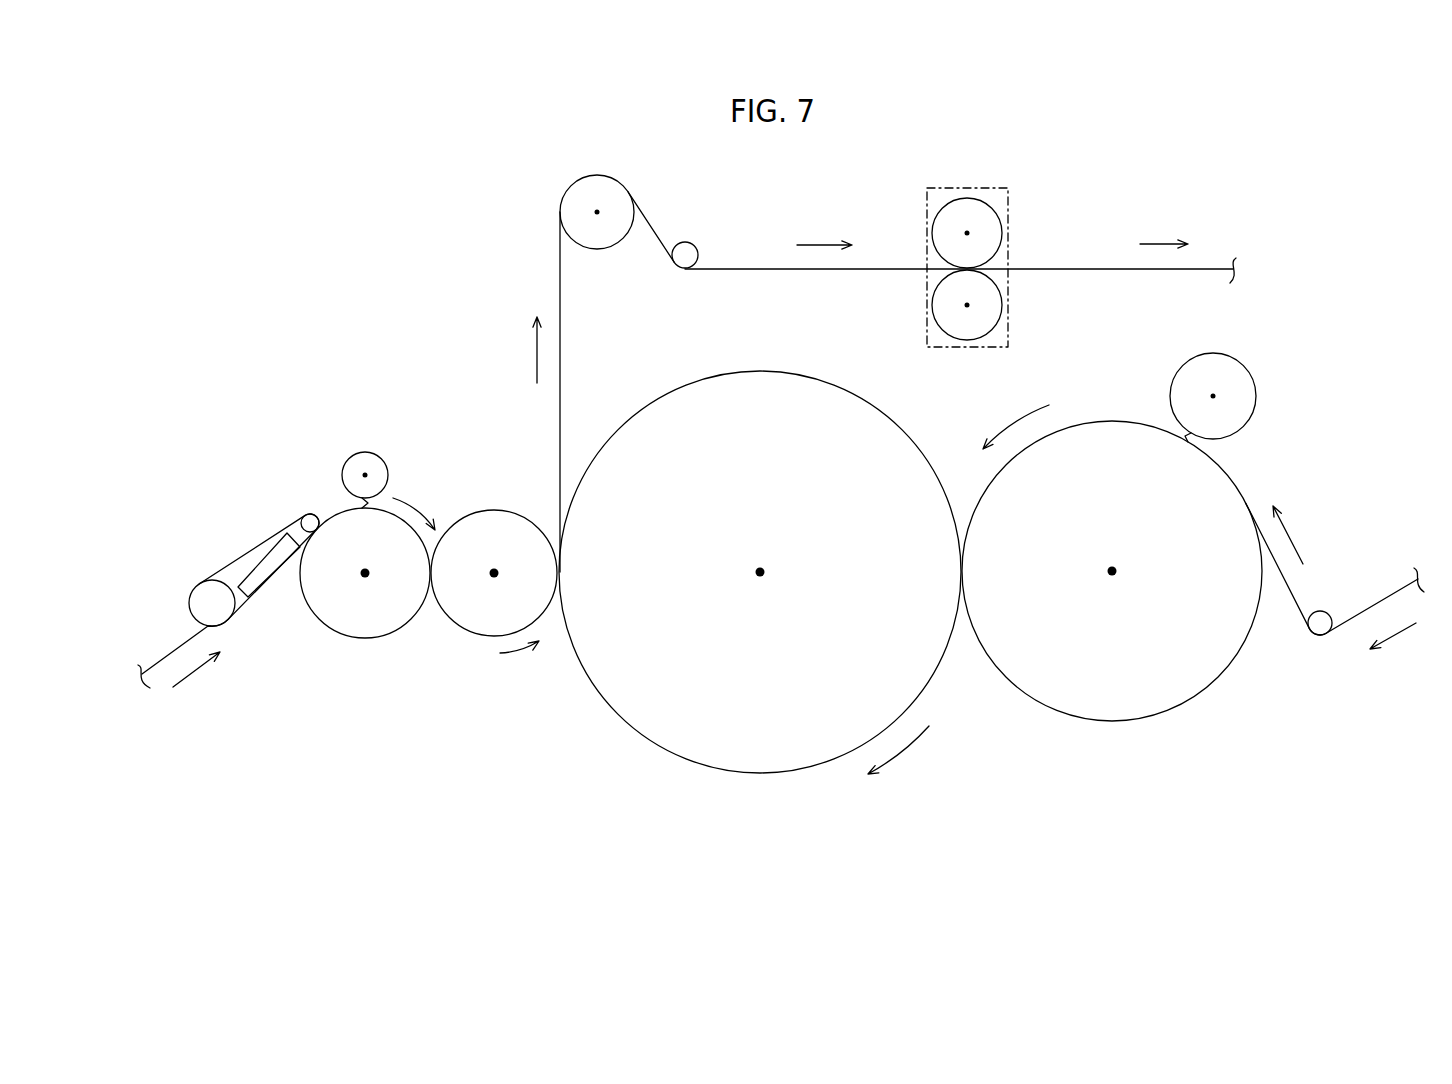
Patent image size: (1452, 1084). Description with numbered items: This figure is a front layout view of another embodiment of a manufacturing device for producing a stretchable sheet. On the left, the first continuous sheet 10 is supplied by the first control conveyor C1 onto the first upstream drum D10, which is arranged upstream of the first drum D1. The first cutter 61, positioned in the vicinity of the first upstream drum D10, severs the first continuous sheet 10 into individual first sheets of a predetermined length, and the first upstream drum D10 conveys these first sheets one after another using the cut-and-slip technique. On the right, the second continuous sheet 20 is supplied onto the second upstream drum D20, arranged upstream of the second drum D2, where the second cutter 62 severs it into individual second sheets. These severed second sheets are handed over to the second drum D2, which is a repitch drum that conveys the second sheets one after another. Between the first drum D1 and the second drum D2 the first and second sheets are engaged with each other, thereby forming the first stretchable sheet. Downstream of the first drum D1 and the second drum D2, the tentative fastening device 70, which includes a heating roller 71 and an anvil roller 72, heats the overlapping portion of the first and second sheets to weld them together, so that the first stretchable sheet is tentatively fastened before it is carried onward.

The first continuous sheet 10 is at (172, 652).
The first control conveyor C1 is at (237, 559).
The first upstream drum D10 is at (327, 613).
The first drum D1 is at (465, 620).
The first cutter 61 is at (373, 462).
The second drum D2 is at (659, 719).
The second upstream drum D20 is at (1049, 686).
The second cutter 62 is at (1240, 382).
The tentative fastening device 70 is at (1000, 229).
The heating roller 71 is at (993, 232).
The anvil roller 72 is at (995, 302).
The second continuous sheet 20 is at (1376, 603).